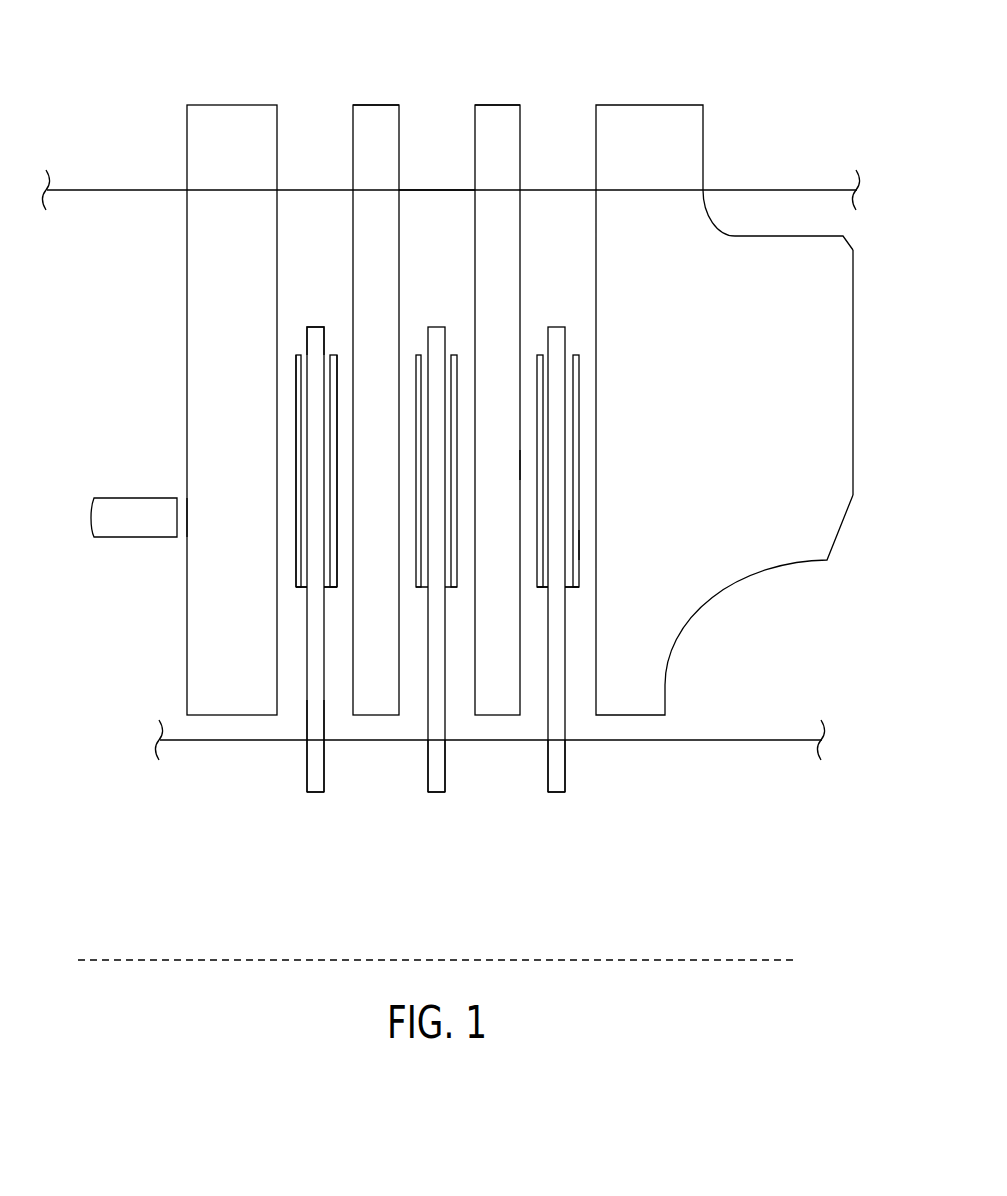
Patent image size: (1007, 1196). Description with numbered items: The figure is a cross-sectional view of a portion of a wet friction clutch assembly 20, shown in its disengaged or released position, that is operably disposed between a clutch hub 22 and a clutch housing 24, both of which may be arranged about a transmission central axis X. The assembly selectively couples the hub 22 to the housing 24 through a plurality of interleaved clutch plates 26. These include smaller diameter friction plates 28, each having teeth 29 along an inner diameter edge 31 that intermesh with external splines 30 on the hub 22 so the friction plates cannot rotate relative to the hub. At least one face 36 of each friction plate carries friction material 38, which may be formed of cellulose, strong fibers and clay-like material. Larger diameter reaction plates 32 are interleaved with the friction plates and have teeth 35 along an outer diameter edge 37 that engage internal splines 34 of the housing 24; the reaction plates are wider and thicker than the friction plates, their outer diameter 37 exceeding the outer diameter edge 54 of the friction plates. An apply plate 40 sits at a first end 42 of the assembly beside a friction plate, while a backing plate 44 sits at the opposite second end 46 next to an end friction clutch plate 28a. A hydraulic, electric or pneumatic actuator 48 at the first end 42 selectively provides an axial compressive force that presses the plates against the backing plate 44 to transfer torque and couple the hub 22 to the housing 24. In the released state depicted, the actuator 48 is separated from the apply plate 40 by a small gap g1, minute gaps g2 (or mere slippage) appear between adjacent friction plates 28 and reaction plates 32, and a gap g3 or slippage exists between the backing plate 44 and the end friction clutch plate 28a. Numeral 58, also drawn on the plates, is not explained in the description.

The wet friction clutch assembly 20 is at (90, 331).
The clutch hub 22 is at (758, 742).
The clutch housing 24 is at (828, 186).
The interleaved clutch plates 26 is at (434, 172).
The friction plates 28 is at (317, 651).
The end friction clutch plate 28a is at (557, 651).
The teeth 29 is at (320, 790).
The splines 30 is at (318, 785).
The inner diameter edge 31 is at (312, 816).
The reaction plates 32 is at (362, 388).
The splines 34 is at (400, 116).
The teeth 35 is at (366, 112).
The face 36 is at (325, 716).
The outer diameter edge 37 is at (377, 82).
The friction material 38 is at (300, 505).
The apply plate 40 is at (191, 652).
The first end 42 is at (92, 112).
The backing plate 44 is at (850, 355).
The second end 46 is at (878, 299).
The actuator 48 is at (132, 527).
The outer diameter edge 54 is at (315, 326).
The sleeve bottom 58 is at (362, 622).
The gap g1 is at (181, 502).
The minute gaps g2 is at (531, 479).
The gap g3 is at (585, 530).
The transmission central axis X is at (105, 958).